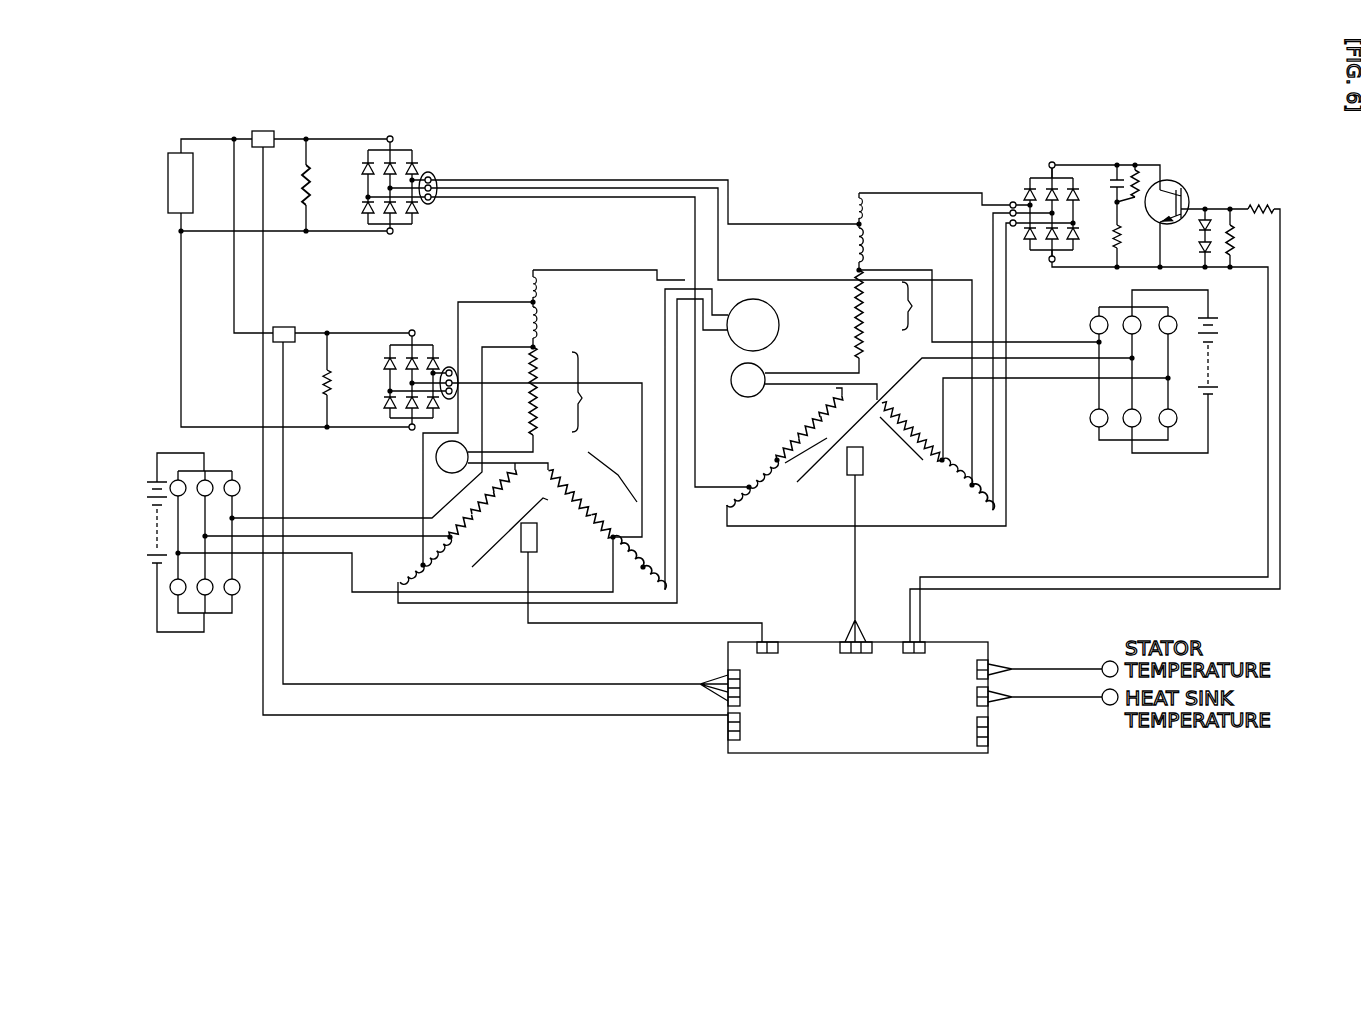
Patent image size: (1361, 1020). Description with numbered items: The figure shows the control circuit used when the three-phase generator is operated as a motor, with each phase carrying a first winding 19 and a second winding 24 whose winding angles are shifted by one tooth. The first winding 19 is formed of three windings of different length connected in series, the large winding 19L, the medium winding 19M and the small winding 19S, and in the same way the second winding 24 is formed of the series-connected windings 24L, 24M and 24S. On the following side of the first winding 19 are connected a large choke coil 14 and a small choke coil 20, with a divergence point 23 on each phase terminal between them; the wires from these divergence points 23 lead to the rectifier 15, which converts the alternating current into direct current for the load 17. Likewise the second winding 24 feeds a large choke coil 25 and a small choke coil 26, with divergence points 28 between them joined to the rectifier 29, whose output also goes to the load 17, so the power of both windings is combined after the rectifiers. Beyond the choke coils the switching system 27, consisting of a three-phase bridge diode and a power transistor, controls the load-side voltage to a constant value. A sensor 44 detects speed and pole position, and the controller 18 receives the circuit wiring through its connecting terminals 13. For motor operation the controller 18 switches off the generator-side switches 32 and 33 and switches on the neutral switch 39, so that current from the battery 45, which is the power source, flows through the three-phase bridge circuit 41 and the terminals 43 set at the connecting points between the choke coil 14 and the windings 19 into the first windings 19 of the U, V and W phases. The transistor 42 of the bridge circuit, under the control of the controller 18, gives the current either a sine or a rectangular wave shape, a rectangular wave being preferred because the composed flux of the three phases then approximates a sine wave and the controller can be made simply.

The terminal for connecting 13 is at (858, 694).
The large choke coil 14 is at (866, 248).
The rectifier 15 is at (400, 141).
The load 17 is at (168, 180).
The controller 18 is at (858, 697).
The first winding 19 is at (826, 480).
The large winding of first winding 19L is at (849, 366).
The medium winding of first winding 19M is at (851, 372).
The small winding of first winding 19S is at (861, 377).
The small choke coil 20 is at (866, 208).
The divergence point 23 is at (864, 224).
The second winding 24 is at (555, 463).
The large winding of second winding 24L is at (544, 451).
The medium winding of second winding 24M is at (546, 454).
The small winding of second winding 24S is at (544, 457).
The large choke coil 25 is at (540, 322).
The small choke coil 26 is at (540, 289).
The switching system 27 is at (780, 325).
The divergence point 28 is at (538, 302).
The rectifier 29 is at (412, 328).
The switch 32 is at (449, 366).
The switch 33 is at (433, 204).
The neutral switch 39 is at (452, 473).
The three phase bridge circuit 41 is at (208, 634).
The transistor 42 is at (234, 472).
The terminal 43 is at (538, 347).
The sensor of speed and pole position 44 is at (537, 548).
The battery 45 is at (155, 565).